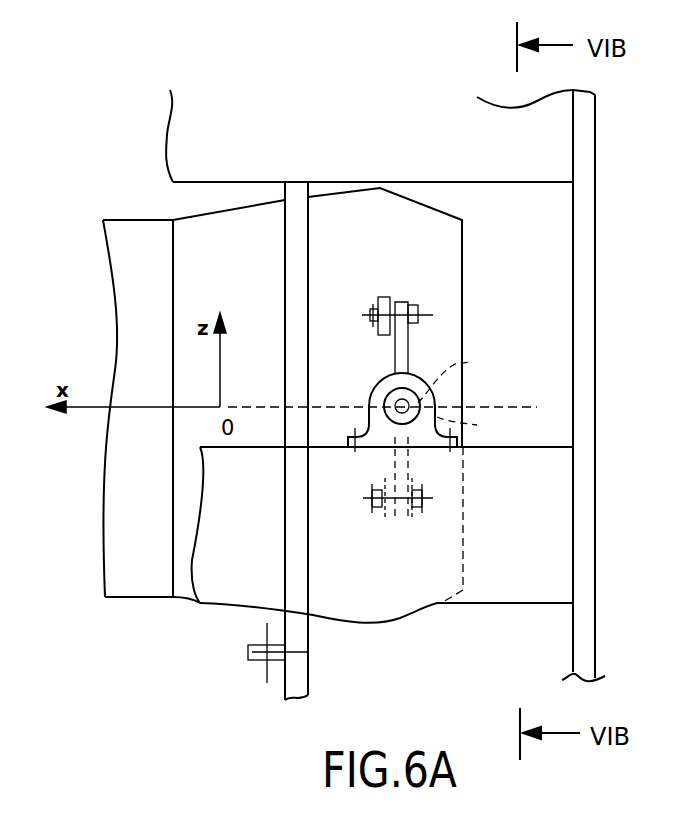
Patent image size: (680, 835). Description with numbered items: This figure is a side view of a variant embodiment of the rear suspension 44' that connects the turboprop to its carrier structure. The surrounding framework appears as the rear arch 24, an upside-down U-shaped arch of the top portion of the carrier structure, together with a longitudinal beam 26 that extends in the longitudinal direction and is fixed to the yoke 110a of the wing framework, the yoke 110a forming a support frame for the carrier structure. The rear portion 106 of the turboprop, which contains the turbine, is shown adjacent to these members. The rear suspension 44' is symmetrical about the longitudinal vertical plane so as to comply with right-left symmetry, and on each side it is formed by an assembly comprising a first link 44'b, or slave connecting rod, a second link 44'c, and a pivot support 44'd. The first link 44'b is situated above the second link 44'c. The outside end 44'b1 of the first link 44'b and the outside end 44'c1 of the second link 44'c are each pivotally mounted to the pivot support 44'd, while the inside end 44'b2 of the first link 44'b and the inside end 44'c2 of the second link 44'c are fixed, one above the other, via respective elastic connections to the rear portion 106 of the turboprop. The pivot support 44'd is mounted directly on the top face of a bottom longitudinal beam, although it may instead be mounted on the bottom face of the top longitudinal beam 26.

The longitudinal beam 26 is at (411, 143).
The yoke 110a is at (588, 310).
The rear arch 24 is at (291, 316).
The rear portion 106 is at (466, 309).
The rear suspension 44' is at (414, 401).
The inside end of the first link 44'b2 is at (401, 285).
The first link 44'b is at (365, 337).
The pivot support 44'd is at (389, 412).
The outside end of the first link 44'b1 is at (476, 376).
The outside end of the second link 44'c1 is at (486, 435).
The second link 44'c is at (349, 477).
The inside end of the second link 44'c2 is at (408, 523).